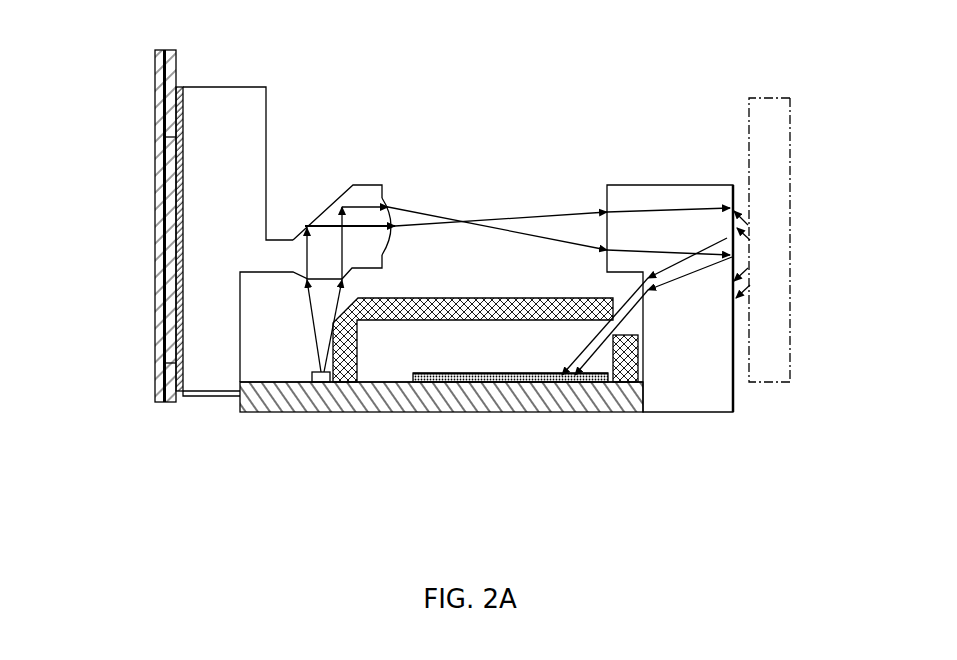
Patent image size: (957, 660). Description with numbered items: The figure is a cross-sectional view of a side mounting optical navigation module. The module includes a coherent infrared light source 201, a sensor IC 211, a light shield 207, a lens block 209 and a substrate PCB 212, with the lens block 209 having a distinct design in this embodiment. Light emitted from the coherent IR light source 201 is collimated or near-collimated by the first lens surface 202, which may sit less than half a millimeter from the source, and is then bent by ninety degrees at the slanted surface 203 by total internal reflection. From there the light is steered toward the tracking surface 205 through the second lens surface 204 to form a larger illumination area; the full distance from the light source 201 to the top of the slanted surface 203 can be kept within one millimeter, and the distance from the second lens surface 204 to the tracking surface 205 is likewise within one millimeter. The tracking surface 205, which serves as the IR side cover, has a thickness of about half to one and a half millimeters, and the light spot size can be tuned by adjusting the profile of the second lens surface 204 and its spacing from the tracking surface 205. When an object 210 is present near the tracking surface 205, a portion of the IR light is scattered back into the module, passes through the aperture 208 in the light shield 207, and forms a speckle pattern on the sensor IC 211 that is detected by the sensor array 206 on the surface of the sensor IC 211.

The coherent infrared light source 201 is at (324, 382).
The first lens surface 202 is at (295, 272).
The slanted surface 203 is at (337, 200).
The second lens surface 204 is at (386, 207).
The tracking surface 205 is at (725, 215).
The sensor array 206 is at (603, 383).
The light shield 207 is at (453, 322).
The aperture 208 is at (802, 240).
The lens block 209 is at (622, 203).
The object 210 is at (772, 237).
The sensor IC 211 is at (397, 393).
The substrate PCB 212 is at (516, 385).